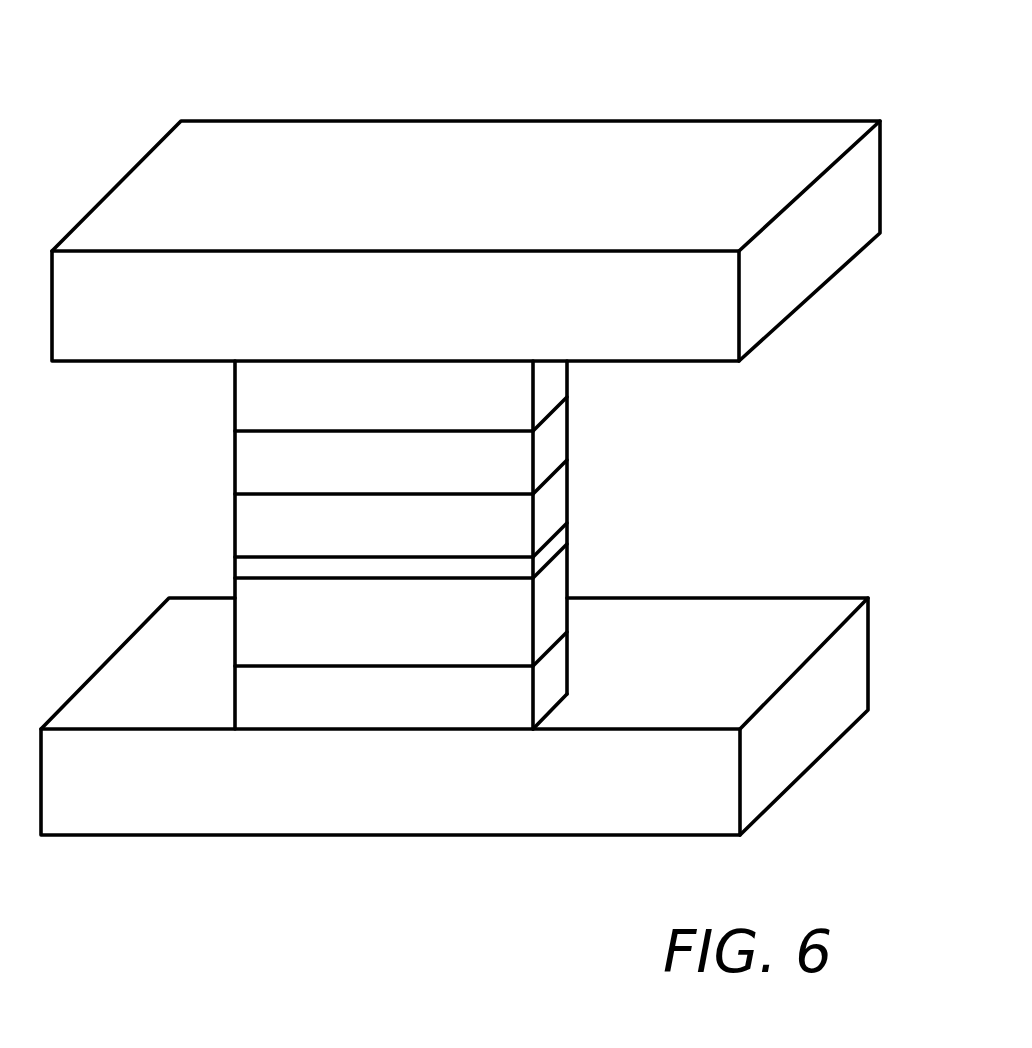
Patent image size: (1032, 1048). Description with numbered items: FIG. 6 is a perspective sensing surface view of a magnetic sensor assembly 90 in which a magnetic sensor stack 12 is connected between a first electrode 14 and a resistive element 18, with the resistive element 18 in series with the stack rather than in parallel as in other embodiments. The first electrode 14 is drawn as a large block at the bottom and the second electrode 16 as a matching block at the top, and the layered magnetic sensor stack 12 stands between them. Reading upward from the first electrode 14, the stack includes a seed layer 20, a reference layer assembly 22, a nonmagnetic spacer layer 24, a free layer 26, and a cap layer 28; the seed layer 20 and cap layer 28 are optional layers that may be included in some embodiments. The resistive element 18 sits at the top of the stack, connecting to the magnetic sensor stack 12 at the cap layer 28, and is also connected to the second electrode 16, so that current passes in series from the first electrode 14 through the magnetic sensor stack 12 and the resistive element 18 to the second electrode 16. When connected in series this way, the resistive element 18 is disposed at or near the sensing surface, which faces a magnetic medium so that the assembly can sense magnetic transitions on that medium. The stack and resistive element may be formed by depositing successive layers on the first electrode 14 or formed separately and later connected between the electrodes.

The magnetic sensor assembly 90 is at (786, 86).
The second electrode 16 is at (394, 316).
The first electrode 14 is at (398, 801).
The magnetic sensor stack 12 is at (364, 545).
The resistive element 18 is at (394, 407).
The cap layer 28 is at (394, 476).
The free layer 26 is at (394, 540).
The nonmagnetic spacer layer 24 is at (560, 540).
The reference layer assembly 22 is at (394, 629).
The seed layer 20 is at (384, 699).